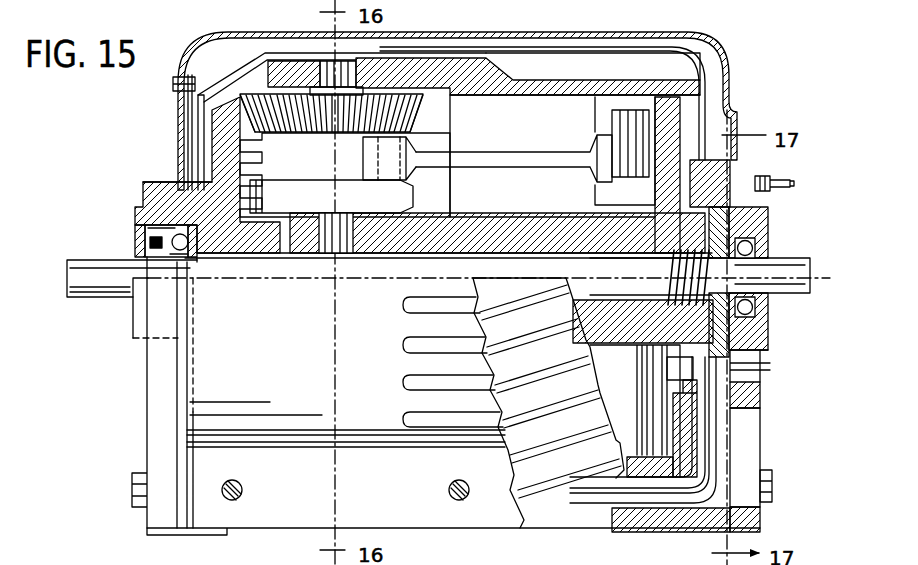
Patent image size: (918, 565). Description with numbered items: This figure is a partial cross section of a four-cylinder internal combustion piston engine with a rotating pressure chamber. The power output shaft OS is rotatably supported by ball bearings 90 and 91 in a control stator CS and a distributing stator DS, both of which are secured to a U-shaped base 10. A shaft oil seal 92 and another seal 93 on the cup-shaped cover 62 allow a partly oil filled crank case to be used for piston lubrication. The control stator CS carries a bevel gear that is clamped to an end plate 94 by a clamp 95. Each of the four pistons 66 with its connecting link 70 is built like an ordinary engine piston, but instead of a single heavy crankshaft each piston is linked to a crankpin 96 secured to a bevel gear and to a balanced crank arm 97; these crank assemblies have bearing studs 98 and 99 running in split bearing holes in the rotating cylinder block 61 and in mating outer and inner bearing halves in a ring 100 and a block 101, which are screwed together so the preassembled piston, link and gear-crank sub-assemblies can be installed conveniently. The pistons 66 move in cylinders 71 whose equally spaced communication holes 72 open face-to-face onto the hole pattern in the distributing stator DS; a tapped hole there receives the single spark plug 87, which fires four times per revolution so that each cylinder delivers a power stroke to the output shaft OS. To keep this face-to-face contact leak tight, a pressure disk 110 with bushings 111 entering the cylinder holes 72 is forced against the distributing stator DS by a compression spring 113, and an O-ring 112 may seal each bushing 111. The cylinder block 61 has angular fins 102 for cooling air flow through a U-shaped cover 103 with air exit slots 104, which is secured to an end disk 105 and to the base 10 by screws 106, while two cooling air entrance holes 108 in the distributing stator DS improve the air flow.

The U-shaped base 10 is at (491, 535).
The cylinder block 61 is at (539, 80).
The cup-shaped cover 62 is at (248, 62).
The piston 66 is at (585, 194).
The connecting link 70 is at (514, 140).
The cylinder 71 is at (458, 215).
The communication hole 72 is at (689, 153).
The spark plug 87 is at (792, 179).
The ball bearing 90 is at (187, 259).
The ball bearing 91 is at (770, 236).
The shaft oil seal 92 is at (143, 230).
The seal 93 is at (195, 188).
The end plate 94 is at (142, 405).
The clamp 95 is at (163, 190).
The crankpin 96 is at (429, 143).
The balanced crank arm 97 is at (287, 180).
The bearing stud 98 is at (392, 70).
The bearing stud 99 is at (330, 260).
The ring 100 is at (290, 60).
The block 101 is at (277, 270).
The angular fin 102 is at (572, 362).
The U-shaped cover 103 is at (725, 80).
The air exit slot 104 is at (416, 353).
The end disk 105 is at (178, 118).
The screw 106 is at (240, 492).
The cooling air entrance hole 108 is at (742, 502).
The pressure disk 110 is at (769, 210).
The bushing 111 is at (771, 371).
The O-ring 112 is at (700, 398).
The compression spring 113 is at (662, 278).
The control stator CS is at (110, 193).
The power output shaft OS is at (72, 256).
The distributing stator DS is at (778, 334).